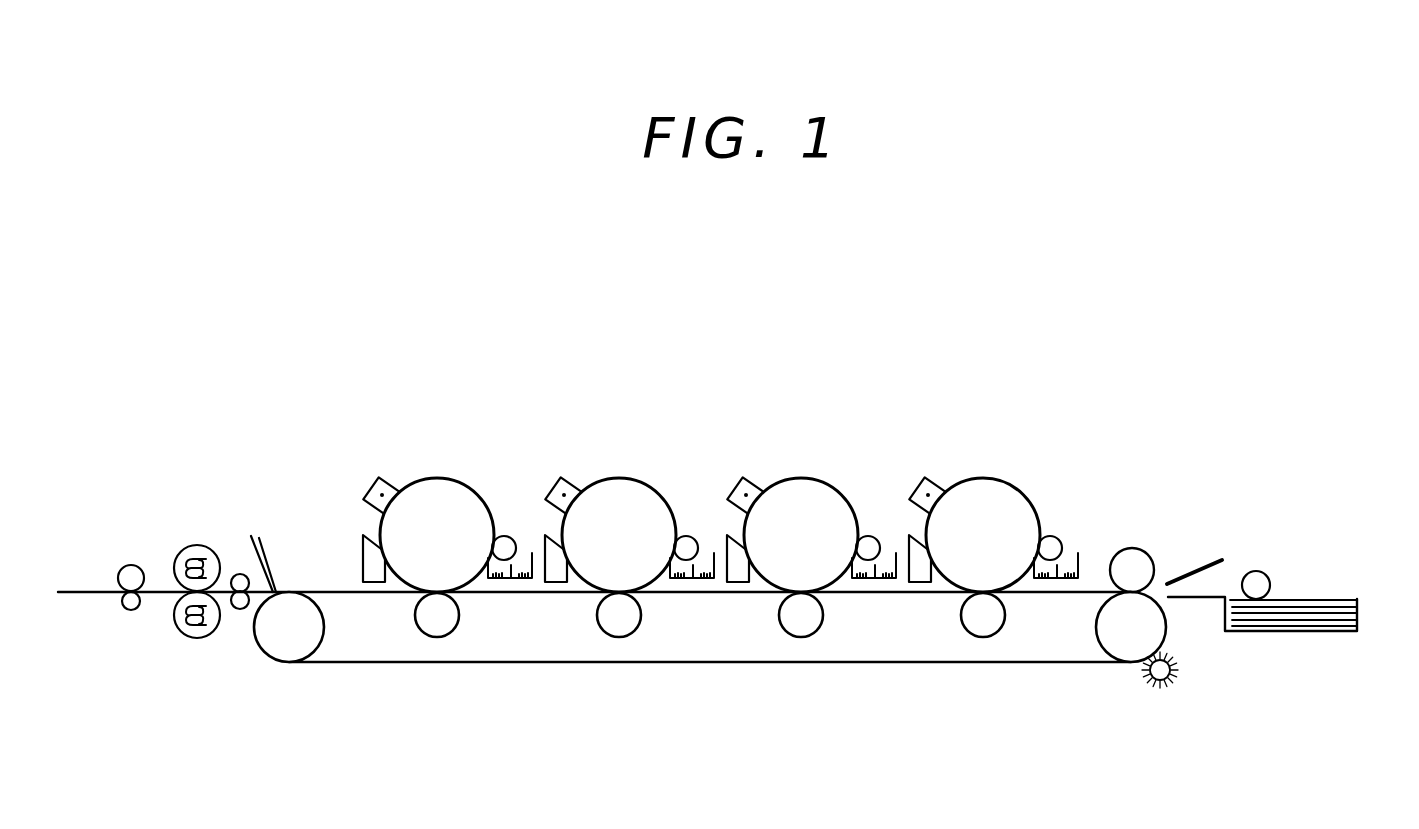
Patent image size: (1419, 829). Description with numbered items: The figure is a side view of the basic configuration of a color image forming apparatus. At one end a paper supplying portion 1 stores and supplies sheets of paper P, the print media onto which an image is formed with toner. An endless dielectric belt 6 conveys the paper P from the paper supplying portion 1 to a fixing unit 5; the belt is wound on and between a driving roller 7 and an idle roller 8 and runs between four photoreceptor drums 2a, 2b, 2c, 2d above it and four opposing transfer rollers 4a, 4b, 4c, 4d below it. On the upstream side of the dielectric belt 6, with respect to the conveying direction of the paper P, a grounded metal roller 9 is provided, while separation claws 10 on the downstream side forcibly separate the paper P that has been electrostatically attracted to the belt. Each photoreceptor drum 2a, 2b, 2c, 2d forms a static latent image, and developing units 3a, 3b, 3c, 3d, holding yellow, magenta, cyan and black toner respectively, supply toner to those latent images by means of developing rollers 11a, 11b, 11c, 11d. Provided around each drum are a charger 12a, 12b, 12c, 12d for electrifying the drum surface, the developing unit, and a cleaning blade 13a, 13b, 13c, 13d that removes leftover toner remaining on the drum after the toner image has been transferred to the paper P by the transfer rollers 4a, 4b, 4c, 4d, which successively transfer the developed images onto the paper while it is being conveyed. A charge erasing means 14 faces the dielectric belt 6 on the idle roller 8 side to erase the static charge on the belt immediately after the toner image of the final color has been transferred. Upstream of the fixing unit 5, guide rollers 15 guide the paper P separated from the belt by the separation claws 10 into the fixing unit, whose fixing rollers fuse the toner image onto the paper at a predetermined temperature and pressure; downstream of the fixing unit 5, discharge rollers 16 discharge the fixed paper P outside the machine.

The paper supplying portion 1 is at (1337, 598).
The paper P is at (1288, 598).
The photoreceptor drum 2a is at (995, 500).
The photoreceptor drum 2b is at (807, 500).
The photoreceptor drum 2c is at (630, 500).
The photoreceptor drum 2d is at (440, 478).
The developing unit 3a is at (1042, 533).
The developing unit 3b is at (864, 533).
The developing unit 3c is at (682, 533).
The developing unit 3d is at (502, 533).
The transfer roller 4a is at (985, 612).
The transfer roller 4b is at (805, 612).
The transfer roller 4c is at (622, 612).
The transfer roller 4d is at (440, 612).
The fixing unit 5 is at (197, 545).
The dielectric belt 6 is at (1058, 664).
The driving roller 7 is at (294, 640).
The idle roller 8 is at (1137, 640).
The metal roller 9 is at (1136, 565).
The separation claws 10 is at (267, 548).
The developing roller 11a is at (1058, 543).
The developing roller 11b is at (885, 543).
The developing roller 11c is at (703, 543).
The developing roller 11d is at (522, 543).
The charger 12a is at (933, 484).
The charger 12b is at (760, 474).
The charger 12c is at (577, 488).
The charger 12d is at (367, 488).
The cleaning blade 13a is at (922, 578).
The cleaning blade 13b is at (740, 578).
The cleaning blade 13c is at (558, 578).
The cleaning blade 13d is at (365, 567).
The charge erasing means 14 is at (1172, 672).
The guide rollers 15 is at (240, 574).
The discharge rollers 16 is at (128, 565).